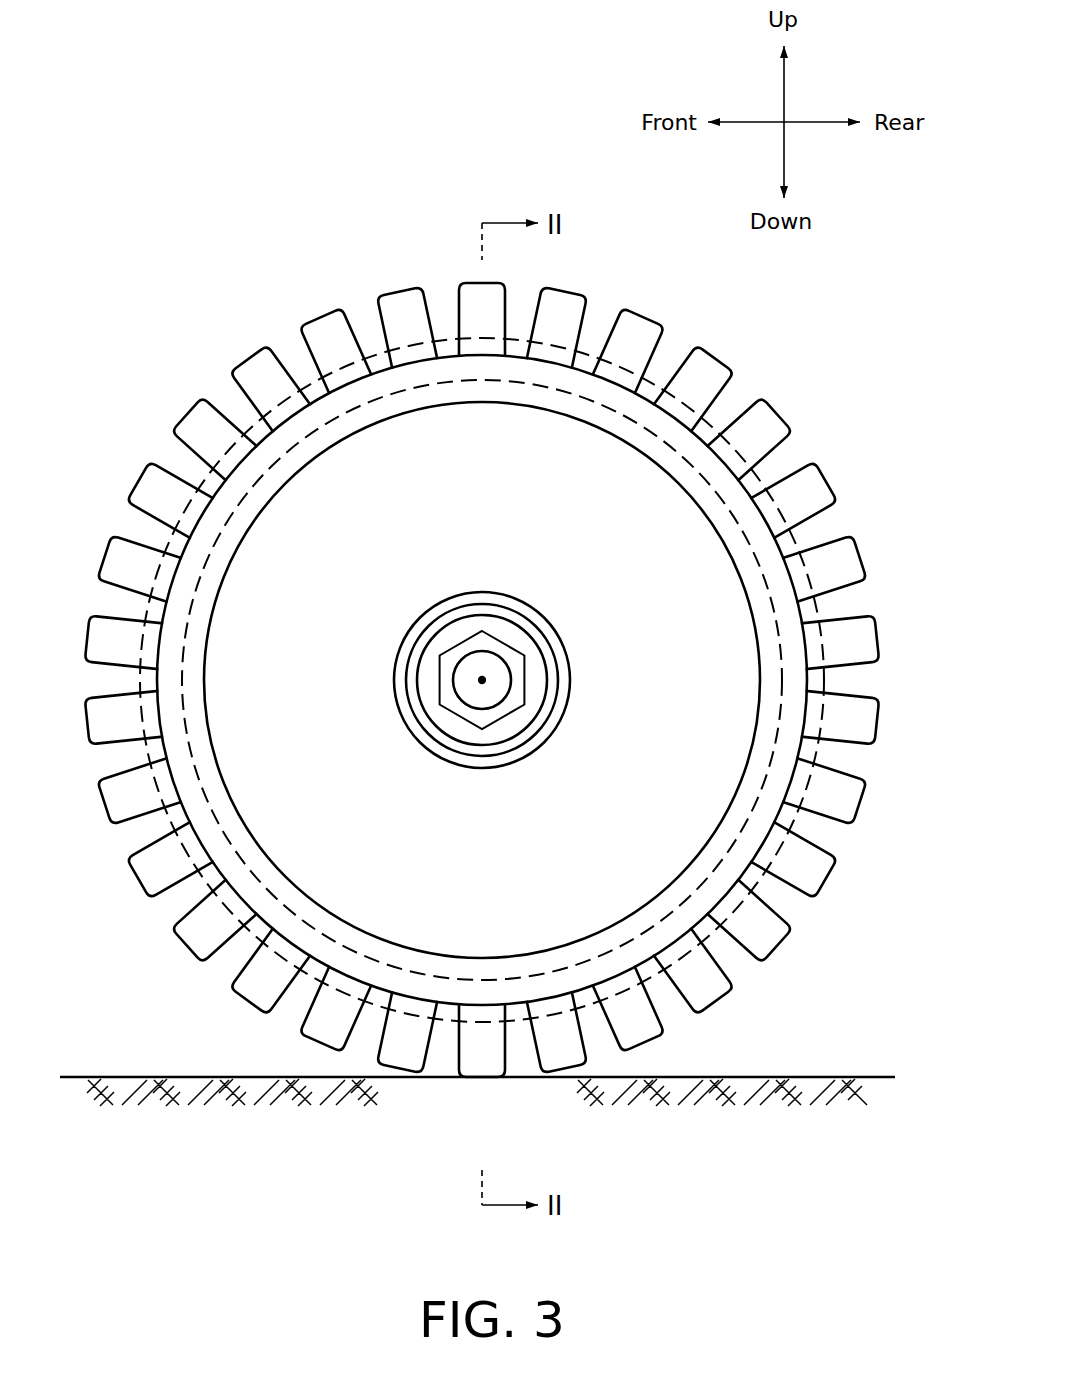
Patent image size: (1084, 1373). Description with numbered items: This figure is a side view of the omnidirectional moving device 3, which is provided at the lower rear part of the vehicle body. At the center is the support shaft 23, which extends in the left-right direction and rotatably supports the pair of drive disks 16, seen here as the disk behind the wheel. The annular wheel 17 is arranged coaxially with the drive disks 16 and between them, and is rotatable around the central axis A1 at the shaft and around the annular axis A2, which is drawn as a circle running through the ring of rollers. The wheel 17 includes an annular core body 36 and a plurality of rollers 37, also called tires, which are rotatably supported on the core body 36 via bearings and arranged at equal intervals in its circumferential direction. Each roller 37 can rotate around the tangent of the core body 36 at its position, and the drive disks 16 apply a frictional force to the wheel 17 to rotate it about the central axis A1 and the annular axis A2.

The omnidirectional moving device 3 is at (200, 252).
The drive disk 16 is at (310, 627).
The wheel 17 is at (310, 318).
The support shaft 23 is at (469, 667).
The core body 36 is at (250, 420).
The roller 37 is at (870, 638).
The central axis A1 is at (484, 684).
The annular axis A2 is at (777, 490).